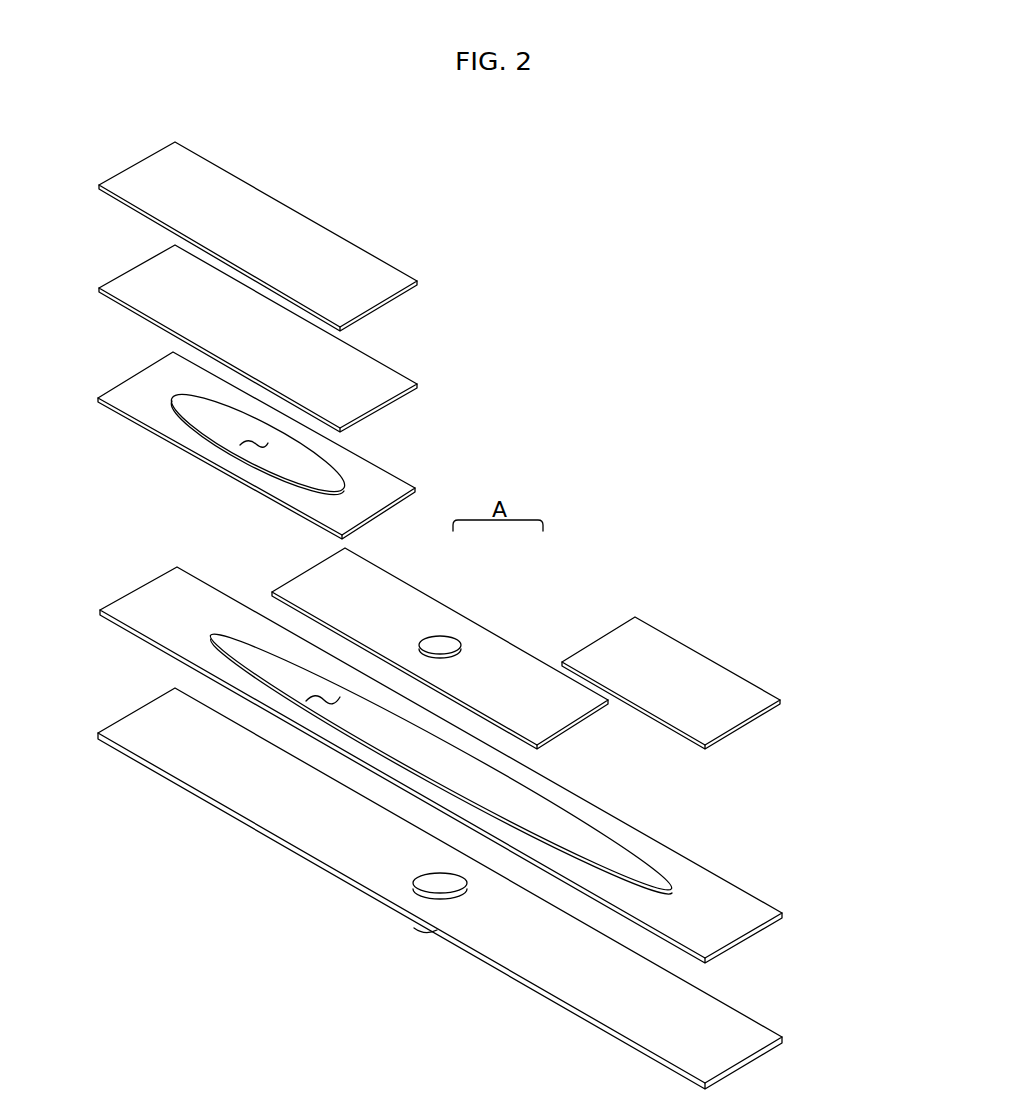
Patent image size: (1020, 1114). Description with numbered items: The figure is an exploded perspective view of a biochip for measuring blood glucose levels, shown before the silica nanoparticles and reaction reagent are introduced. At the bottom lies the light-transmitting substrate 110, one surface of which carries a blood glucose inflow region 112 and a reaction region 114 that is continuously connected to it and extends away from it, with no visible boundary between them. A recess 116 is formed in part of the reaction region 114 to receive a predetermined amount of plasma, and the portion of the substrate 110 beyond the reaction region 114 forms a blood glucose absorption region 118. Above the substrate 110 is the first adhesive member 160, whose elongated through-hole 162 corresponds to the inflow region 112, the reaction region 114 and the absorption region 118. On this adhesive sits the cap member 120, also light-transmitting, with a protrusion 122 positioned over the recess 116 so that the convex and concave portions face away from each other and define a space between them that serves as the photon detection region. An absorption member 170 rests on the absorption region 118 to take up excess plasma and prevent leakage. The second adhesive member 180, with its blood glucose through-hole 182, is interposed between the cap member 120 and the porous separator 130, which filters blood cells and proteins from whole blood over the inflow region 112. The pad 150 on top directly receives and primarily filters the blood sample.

The substrate 110 is at (763, 1028).
The blood glucose inflow region 112 is at (228, 770).
The reaction region 114 is at (313, 818).
The recess 116 is at (440, 878).
The blood glucose absorption region 118 is at (672, 1013).
The cap member 120 is at (580, 722).
The protrusion 122 is at (440, 636).
The porous separator 130 is at (383, 360).
The pad 150 is at (380, 258).
The first adhesive member 160 is at (763, 905).
The through-hole 162 is at (318, 693).
The absorption member 170 is at (753, 679).
The second adhesive member 180 is at (382, 468).
The blood glucose through-hole 182 is at (258, 443).